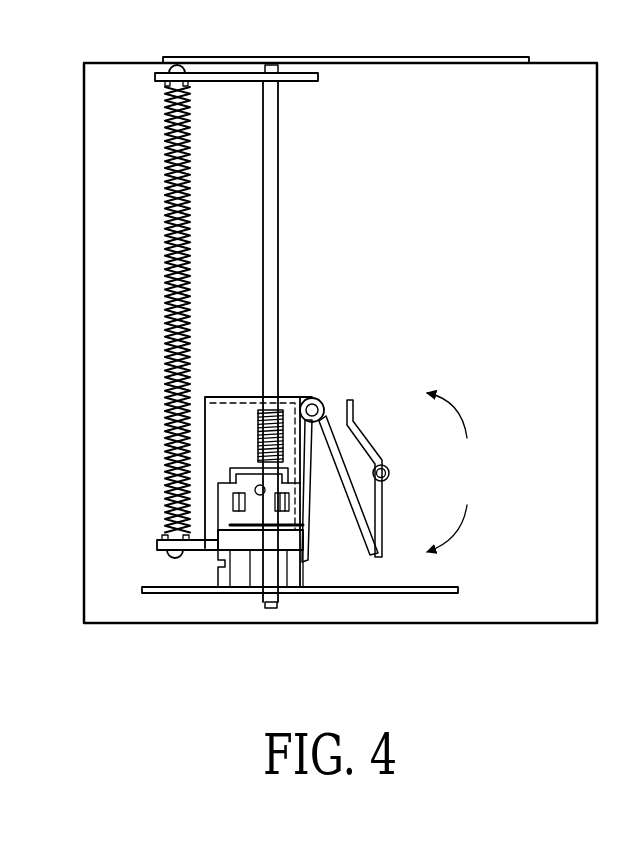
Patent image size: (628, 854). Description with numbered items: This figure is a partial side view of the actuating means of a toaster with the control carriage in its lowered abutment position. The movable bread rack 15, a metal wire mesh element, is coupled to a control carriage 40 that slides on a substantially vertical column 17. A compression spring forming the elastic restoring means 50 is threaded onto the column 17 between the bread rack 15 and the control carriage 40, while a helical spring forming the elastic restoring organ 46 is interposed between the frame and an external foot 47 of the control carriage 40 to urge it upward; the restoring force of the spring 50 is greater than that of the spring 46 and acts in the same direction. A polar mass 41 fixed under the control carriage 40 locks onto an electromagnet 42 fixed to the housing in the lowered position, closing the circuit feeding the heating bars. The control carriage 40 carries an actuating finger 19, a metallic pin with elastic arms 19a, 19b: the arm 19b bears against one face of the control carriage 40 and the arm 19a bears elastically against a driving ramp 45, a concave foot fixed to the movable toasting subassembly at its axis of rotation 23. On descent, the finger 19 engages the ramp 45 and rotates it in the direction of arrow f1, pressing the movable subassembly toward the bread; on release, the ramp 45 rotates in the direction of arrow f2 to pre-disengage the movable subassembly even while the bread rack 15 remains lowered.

The movable bread rack 15 is at (217, 548).
The column 17 is at (280, 178).
The actuating finger 19 is at (351, 501).
The arm 19a is at (362, 550).
The arm 19b is at (307, 548).
The axis of rotation 23 is at (390, 475).
The control carriage 40 is at (221, 406).
The polar mass 41 is at (230, 522).
The electromagnet 42 is at (225, 580).
The driving ramp 45 is at (358, 437).
The elastic restoring organ 46 is at (167, 142).
The external foot 47 is at (158, 542).
The elastic restoring means 50 is at (292, 408).
The arrow F1 f1 is at (450, 415).
The arrow F2 f2 is at (450, 528).